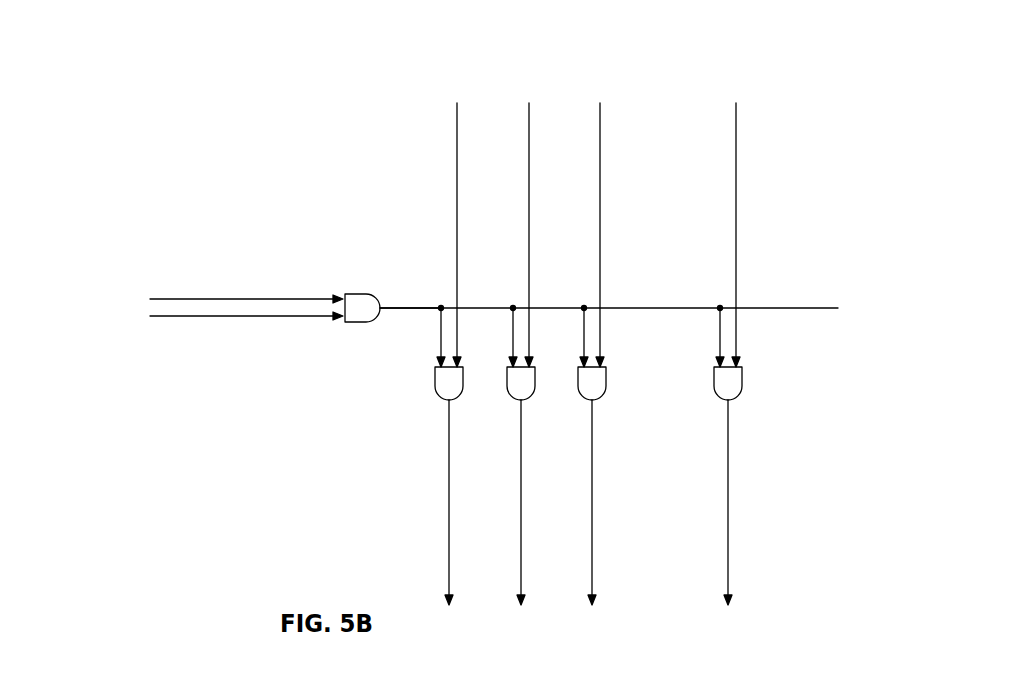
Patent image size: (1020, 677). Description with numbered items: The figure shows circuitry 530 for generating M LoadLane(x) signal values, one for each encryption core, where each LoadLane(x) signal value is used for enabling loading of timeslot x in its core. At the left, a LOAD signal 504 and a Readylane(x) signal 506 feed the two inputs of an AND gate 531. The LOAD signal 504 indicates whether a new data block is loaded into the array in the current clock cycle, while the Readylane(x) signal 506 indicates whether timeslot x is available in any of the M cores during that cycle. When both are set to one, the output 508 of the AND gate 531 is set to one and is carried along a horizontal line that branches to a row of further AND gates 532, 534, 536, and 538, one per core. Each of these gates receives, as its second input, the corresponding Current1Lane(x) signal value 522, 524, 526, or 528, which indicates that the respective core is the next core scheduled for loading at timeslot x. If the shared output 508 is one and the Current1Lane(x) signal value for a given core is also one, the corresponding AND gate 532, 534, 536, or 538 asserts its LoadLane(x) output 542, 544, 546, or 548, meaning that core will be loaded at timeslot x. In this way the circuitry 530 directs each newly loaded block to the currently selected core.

The circuitry 530 is at (172, 60).
The LOAD signal 504 is at (192, 272).
The Readylane(x) signal 506 is at (216, 352).
The AND gate output signal 508 is at (403, 306).
The AND gate 531 is at (363, 323).
The Current1Lane(x) signal value 522 is at (457, 132).
The Current1Lane(x) signal value 524 is at (529, 132).
The Current1Lane(x) signal value 526 is at (601, 132).
The Current1Lane(x) signal value 528 is at (736, 132).
The AND gate 532 is at (463, 382).
The AND gate 534 is at (535, 382).
The AND gate 536 is at (606, 382).
The AND gate 538 is at (743, 382).
The loadlane(x)1 signal 542 is at (450, 575).
The loadlane(x)2 signal 544 is at (522, 575).
The loadlane(x)3 signal 546 is at (593, 578).
The loadlane(x)4 signal 548 is at (729, 578).